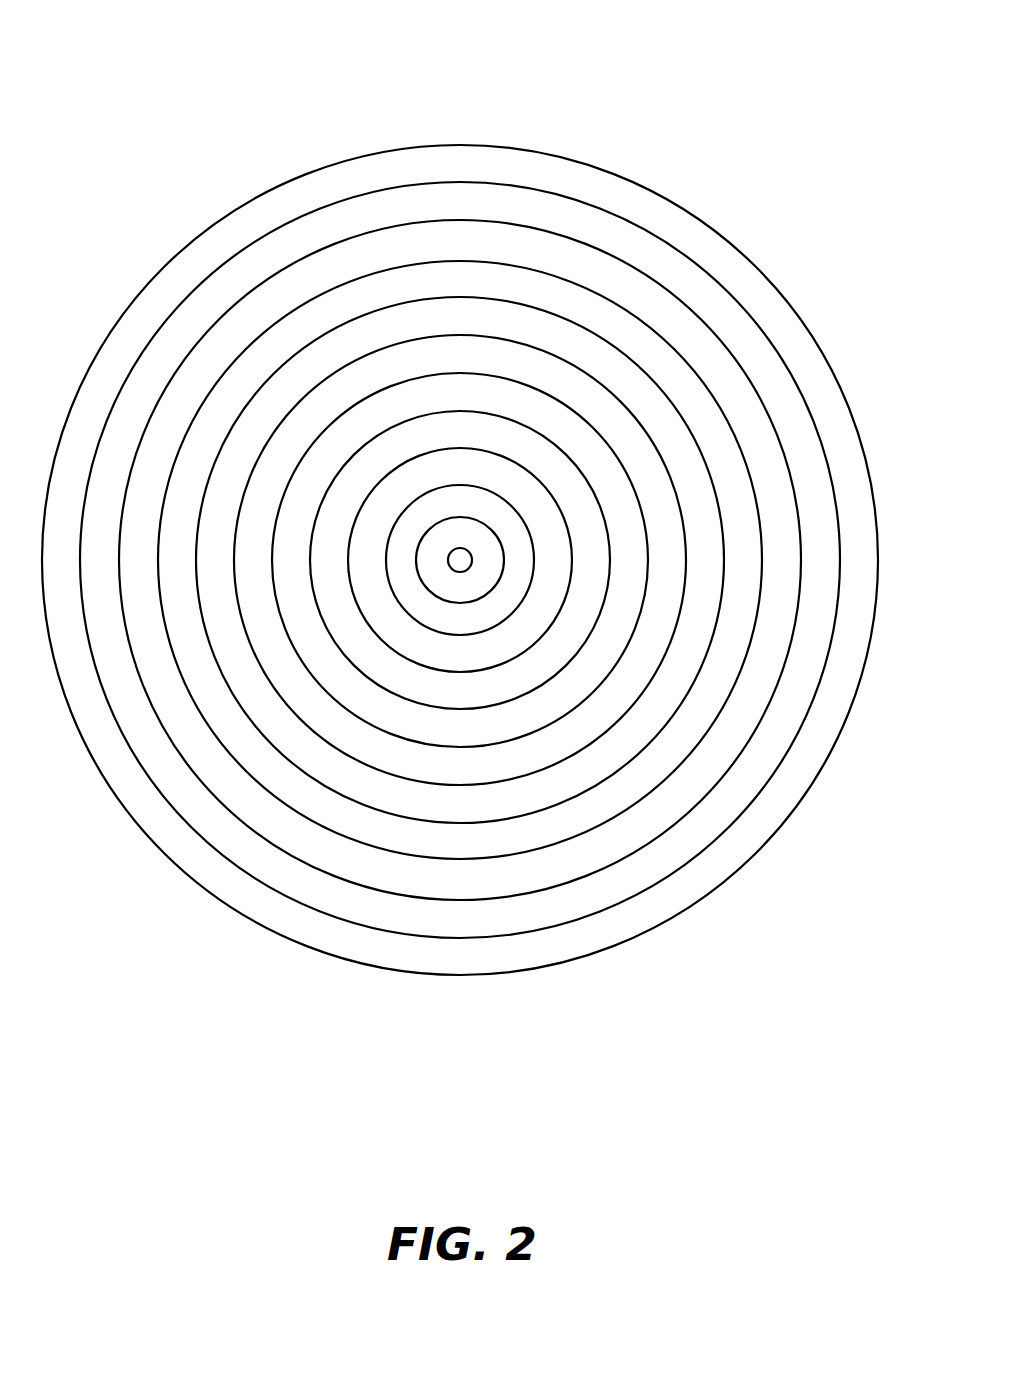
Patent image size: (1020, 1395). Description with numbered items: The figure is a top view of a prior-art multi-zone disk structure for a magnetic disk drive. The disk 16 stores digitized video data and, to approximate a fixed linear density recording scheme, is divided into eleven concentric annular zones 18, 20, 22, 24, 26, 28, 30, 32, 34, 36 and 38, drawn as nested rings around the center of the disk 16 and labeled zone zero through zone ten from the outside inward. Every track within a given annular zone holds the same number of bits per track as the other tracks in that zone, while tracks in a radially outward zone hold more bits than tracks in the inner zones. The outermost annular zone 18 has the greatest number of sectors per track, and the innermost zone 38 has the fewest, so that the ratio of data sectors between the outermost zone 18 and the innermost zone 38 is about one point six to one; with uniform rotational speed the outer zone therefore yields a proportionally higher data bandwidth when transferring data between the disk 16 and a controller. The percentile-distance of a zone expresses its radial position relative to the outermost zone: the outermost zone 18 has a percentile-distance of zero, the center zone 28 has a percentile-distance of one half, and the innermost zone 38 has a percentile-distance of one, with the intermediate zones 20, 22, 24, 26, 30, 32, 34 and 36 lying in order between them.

The disk 16 is at (818, 72).
The outermost annular zone 18 is at (869, 575).
The annular zone 20 is at (829, 575).
The annular zone 22 is at (791, 575).
The annular zone 24 is at (753, 575).
The annular zone 26 is at (716, 575).
The center zone 28 is at (678, 575).
The annular zone 30 is at (639, 575).
The annular zone 32 is at (601, 575).
The annular zone 34 is at (563, 575).
The annular zone 36 is at (532, 575).
The innermost zone 38 is at (501, 575).